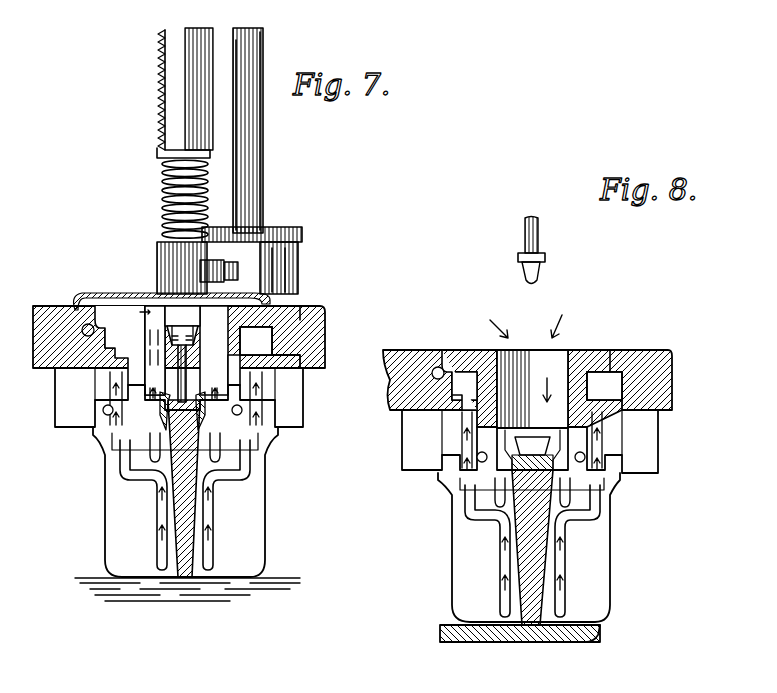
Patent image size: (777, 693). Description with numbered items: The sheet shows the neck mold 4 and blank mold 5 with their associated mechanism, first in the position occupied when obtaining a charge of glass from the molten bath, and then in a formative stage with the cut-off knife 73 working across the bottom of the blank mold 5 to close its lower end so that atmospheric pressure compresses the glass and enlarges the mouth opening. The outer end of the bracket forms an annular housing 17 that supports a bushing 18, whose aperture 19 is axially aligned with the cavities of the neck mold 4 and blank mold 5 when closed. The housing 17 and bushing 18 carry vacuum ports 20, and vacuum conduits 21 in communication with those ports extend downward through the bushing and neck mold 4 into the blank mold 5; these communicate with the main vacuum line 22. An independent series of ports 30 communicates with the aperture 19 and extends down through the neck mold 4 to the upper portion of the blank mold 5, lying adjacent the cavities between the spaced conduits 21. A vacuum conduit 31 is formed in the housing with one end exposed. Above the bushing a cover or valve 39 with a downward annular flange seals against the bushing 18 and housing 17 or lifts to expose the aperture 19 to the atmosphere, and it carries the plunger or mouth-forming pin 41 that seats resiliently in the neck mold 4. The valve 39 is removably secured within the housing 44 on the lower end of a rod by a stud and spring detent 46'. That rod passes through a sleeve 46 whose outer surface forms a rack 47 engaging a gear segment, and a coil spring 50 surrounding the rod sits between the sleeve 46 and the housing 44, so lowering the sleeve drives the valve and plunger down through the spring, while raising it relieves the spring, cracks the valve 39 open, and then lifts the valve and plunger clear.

In FIG. 7, the lower body / nozzle holder 4 is at (306, 398).
In FIG. 8, the lower body / nozzle holder 4 is at (655, 450).
In FIG. 7, the cup / bowl 5 is at (266, 549).
In FIG. 8, the cup / bowl 5 is at (612, 588).
In FIG. 7, the annular housing 17 is at (326, 339).
In FIG. 8, the annular housing 17 is at (674, 393).
In FIG. 7, the bushing 18 is at (296, 313).
In FIG. 8, the bushing 18 is at (612, 356).
In FIG. 7, the aperture 19 is at (270, 302).
In FIG. 8, the aperture 19 is at (560, 348).
In FIG. 7, the vacuum ports 20 is at (262, 334).
In FIG. 8, the vacuum ports 20 is at (600, 378).
In FIG. 7, the vacuum conduits 21 is at (255, 422).
In FIG. 8, the vacuum conduits 21 is at (605, 465).
In FIG. 7, the vacuum line 22 is at (263, 176).
In FIG. 7, the ports 30 is at (103, 410).
In FIG. 8, the ports 30 is at (477, 460).
In FIG. 7, the vacuum conduit 31 is at (84, 322).
In FIG. 8, the vacuum conduit 31 is at (438, 366).
In FIG. 7, the cover valve 39 is at (148, 293).
In FIG. 7, the mouth-forming pin 41 is at (188, 380).
In FIG. 8, the mouth-forming pin 41 is at (538, 252).
In FIG. 7, the housing 44 is at (157, 262).
In FIG. 7, the sleeve 46 is at (165, 93).
In FIG. 7, the spring detent 46' is at (248, 238).
In FIG. 7, the rack 47 is at (160, 68).
In FIG. 7, the coil spring 50 is at (163, 170).
In FIG. 8, the cut-off knife 73 is at (498, 643).